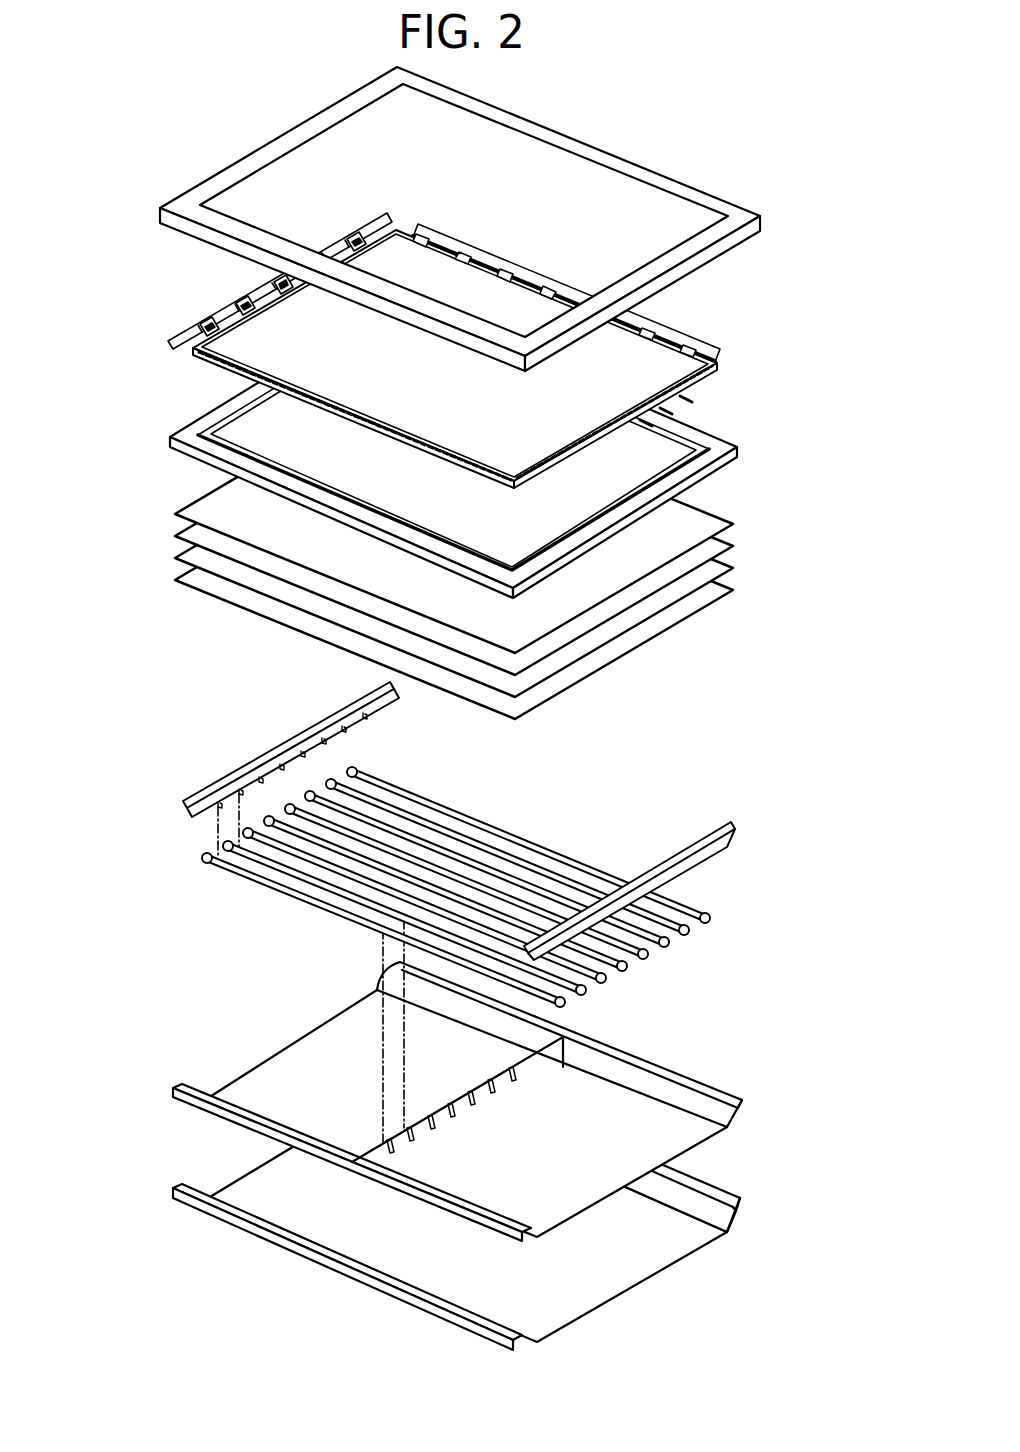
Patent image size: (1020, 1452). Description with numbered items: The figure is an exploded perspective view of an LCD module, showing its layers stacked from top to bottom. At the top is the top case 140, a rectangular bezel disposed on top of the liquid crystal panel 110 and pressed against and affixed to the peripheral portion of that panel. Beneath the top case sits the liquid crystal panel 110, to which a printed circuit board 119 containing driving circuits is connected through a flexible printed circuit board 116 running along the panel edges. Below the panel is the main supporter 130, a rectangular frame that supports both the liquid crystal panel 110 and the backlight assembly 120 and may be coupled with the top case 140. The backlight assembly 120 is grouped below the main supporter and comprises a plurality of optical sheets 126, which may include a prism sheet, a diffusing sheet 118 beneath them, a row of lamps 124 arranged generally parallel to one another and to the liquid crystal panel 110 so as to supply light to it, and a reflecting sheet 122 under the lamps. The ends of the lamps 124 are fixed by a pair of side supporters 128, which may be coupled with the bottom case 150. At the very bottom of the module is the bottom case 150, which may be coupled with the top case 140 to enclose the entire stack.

The liquid crystal panel 110 is at (735, 378).
The flexible printed circuit board 116 is at (722, 346).
The diffusing sheet 118 is at (702, 604).
The printed circuit board 119 is at (673, 334).
The backlight assembly 120 is at (828, 1005).
The reflecting sheet 122 is at (668, 1128).
The lamp 124 is at (693, 900).
The optical sheets 126 is at (752, 520).
The side supporters 128 is at (383, 714).
The main supporter 130 is at (177, 447).
The top case 140 is at (187, 202).
The bottom case 150 is at (590, 1287).